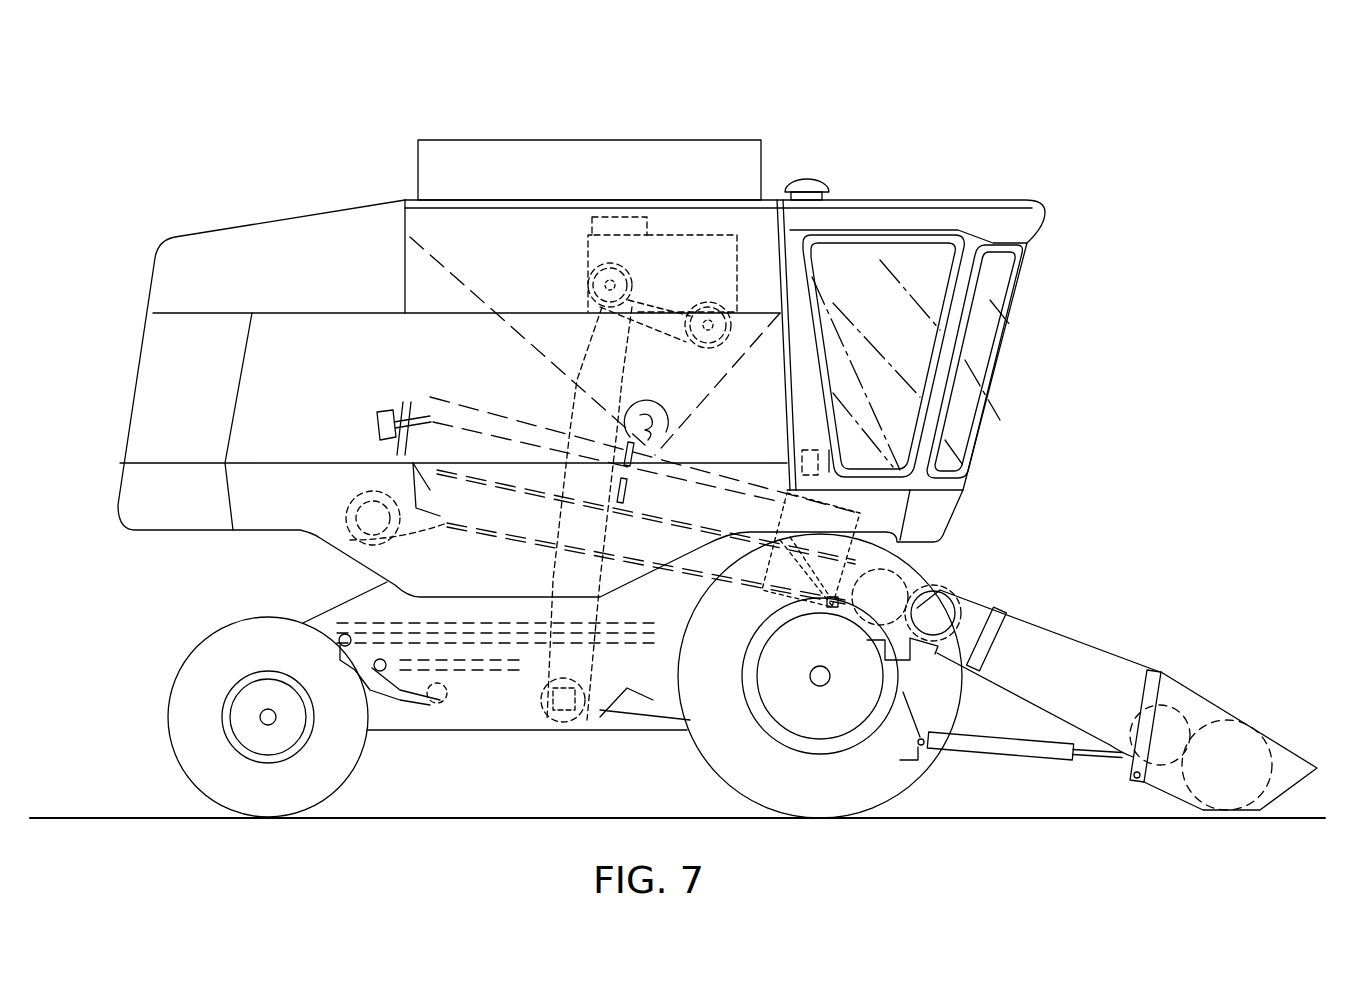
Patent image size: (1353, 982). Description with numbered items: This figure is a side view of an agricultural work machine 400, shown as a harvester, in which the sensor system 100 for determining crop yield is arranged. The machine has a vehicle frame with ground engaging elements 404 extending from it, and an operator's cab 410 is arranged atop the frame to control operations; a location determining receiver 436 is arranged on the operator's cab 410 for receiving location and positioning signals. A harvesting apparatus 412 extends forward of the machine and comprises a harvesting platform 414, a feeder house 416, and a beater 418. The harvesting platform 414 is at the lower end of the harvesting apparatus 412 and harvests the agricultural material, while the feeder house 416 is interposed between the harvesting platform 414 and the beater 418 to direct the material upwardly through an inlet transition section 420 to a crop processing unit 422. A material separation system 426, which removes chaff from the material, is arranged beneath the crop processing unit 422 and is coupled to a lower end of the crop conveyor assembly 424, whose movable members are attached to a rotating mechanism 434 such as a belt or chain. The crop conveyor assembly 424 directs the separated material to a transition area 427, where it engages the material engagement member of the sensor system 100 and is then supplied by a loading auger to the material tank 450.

The agricultural work machine 400 is at (1130, 80).
The ground engaging elements 404 is at (332, 740).
The operator's cab 410 is at (878, 285).
The harvesting apparatus 412 is at (1124, 672).
The harvesting platform 414 is at (1223, 716).
The feeder house 416 is at (1043, 647).
The beater 418 is at (915, 572).
The inlet transition section 420 is at (848, 557).
The crop processing unit 422 is at (695, 448).
The crop conveyor assembly 424 is at (637, 326).
The material separation system 426 is at (333, 604).
The transition area 427 is at (648, 278).
The rotating mechanism 434 is at (600, 327).
The location determining receiver 436 is at (808, 178).
The material tank 450 is at (647, 140).
The sensor system 100 is at (622, 212).